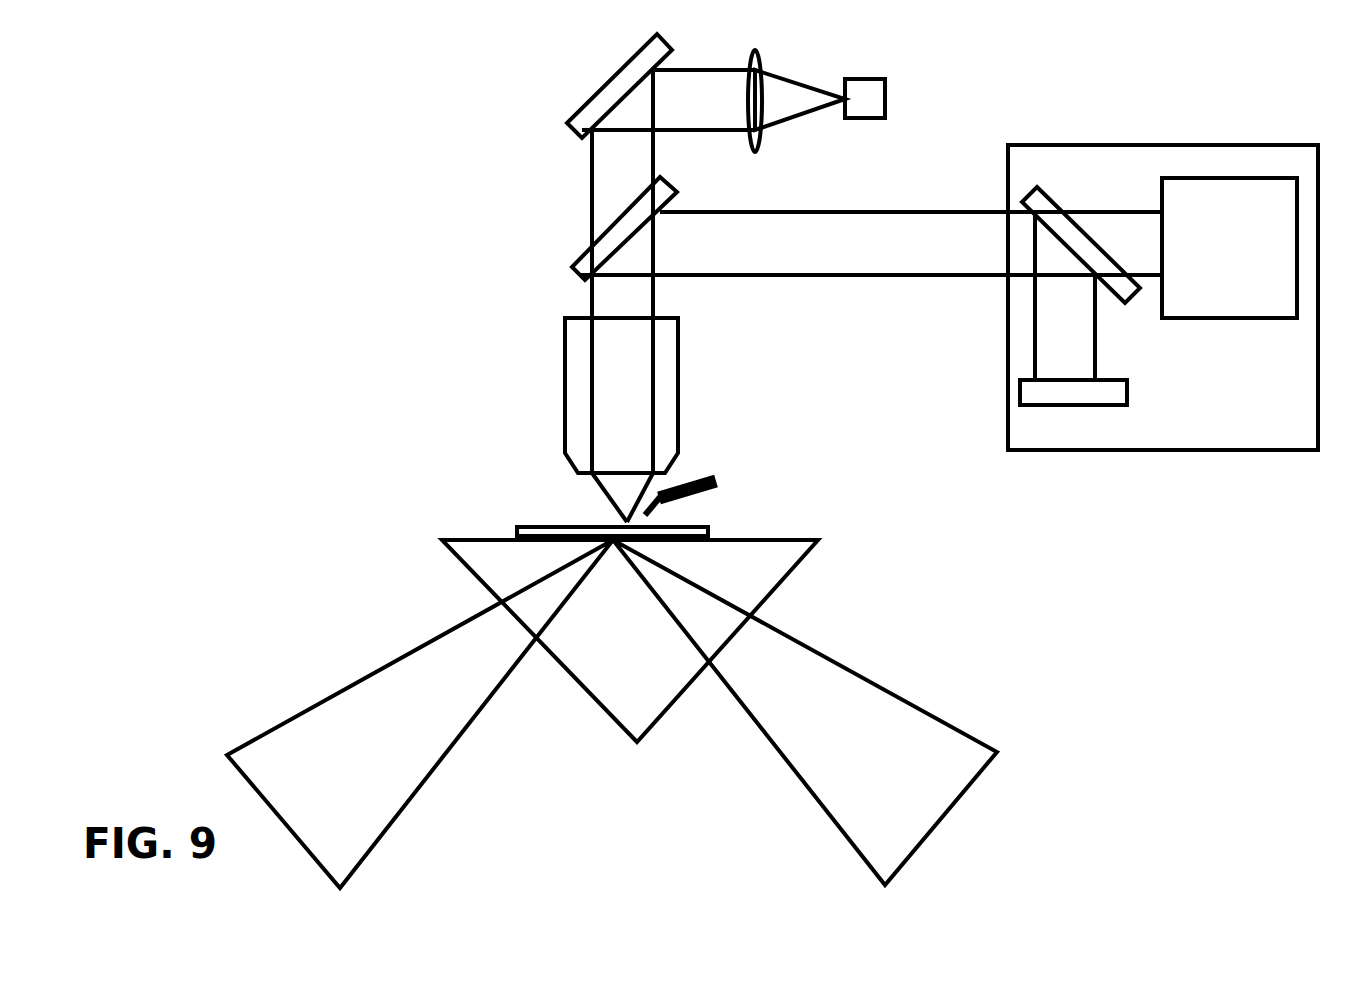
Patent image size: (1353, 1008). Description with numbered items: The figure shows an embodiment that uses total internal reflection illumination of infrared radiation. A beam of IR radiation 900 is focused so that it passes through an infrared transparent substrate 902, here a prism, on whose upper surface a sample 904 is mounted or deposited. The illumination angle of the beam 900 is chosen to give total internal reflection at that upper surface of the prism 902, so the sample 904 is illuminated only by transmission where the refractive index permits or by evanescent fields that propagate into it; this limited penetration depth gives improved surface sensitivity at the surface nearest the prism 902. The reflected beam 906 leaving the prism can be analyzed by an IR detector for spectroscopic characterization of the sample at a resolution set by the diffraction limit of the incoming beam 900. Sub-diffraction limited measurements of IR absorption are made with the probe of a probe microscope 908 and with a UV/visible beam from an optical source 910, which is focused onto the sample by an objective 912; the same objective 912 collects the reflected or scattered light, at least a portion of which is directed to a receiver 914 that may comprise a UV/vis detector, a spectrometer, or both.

The beam of IR radiation 900 is at (805, 712).
The infrared transparent substrate 902 is at (630, 641).
The sample 904 is at (612, 515).
The reflected beam 906 is at (420, 714).
The probe microscope 908 is at (708, 483).
The optical source 910 is at (821, 89).
The objective 912 is at (599, 420).
The receiver 914 is at (1163, 275).